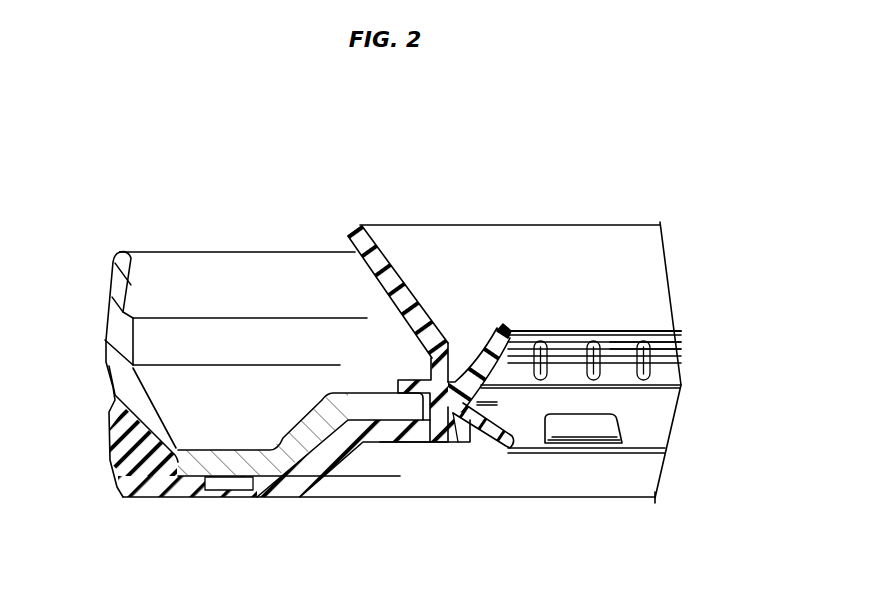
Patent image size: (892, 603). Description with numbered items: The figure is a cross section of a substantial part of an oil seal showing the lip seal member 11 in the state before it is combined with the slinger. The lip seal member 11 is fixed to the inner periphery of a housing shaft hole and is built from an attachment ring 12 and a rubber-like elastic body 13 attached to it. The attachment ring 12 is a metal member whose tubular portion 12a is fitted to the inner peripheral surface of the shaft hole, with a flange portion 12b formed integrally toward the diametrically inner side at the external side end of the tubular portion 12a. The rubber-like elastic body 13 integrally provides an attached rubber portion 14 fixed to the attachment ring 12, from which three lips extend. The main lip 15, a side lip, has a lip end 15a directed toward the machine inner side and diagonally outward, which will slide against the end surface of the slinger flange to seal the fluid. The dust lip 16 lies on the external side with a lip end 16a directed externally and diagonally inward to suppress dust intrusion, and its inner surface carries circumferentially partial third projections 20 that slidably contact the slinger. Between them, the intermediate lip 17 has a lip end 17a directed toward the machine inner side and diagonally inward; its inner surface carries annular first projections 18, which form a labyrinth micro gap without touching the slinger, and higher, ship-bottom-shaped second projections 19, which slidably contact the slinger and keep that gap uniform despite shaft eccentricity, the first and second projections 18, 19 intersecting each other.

The lip seal member 11 is at (135, 486).
The attachment ring 12 is at (187, 481).
The tubular portion 12a is at (106, 338).
The flange portion 12b is at (376, 396).
The rubber-like elastic body 13 is at (284, 481).
The attached rubber portion 14 is at (433, 425).
The main lip 15 is at (420, 316).
The lip end 15a is at (357, 238).
The dust lip 16 is at (487, 425).
The lip end 16a is at (510, 434).
The intermediate lip 17 is at (494, 340).
The lip end 17a is at (512, 328).
The first projections 18 is at (598, 341).
The second projections 19 is at (625, 352).
The third projections 20 is at (585, 428).